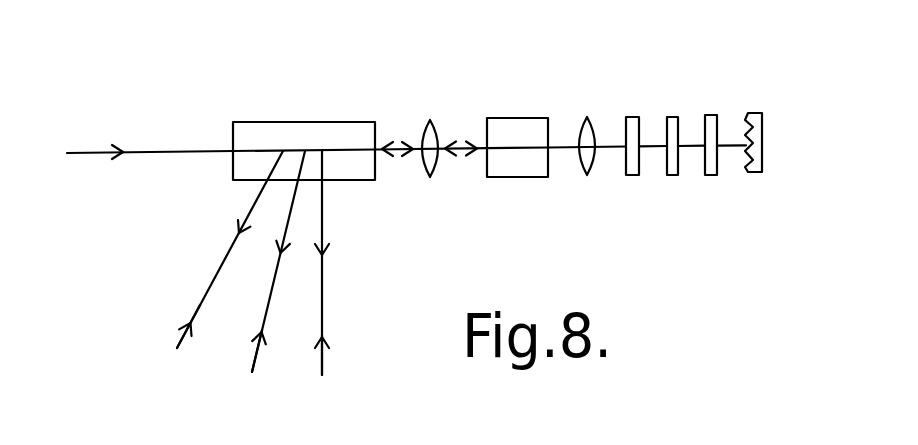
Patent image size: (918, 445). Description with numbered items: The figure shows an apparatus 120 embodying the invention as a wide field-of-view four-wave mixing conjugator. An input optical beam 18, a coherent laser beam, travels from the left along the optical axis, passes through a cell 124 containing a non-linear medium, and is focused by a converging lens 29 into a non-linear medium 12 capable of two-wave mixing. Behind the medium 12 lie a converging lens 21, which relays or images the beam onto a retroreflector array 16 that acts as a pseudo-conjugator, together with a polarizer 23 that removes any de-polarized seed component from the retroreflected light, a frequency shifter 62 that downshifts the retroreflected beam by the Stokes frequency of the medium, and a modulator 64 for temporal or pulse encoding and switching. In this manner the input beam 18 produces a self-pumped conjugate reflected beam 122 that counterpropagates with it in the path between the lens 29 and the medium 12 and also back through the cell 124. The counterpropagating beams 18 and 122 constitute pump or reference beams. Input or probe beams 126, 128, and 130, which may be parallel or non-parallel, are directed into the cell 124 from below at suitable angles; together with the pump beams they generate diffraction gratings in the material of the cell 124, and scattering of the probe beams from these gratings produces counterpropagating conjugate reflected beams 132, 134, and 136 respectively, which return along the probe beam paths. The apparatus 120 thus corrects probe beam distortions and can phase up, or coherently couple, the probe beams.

The non-linear medium 12 is at (508, 117).
The retroreflector array 16 is at (759, 113).
The input optical beam 18 is at (178, 150).
The converging lens 21 is at (587, 117).
The polarizer 23 is at (632, 177).
The converging lens 29 is at (432, 118).
The frequency shifter 62 is at (672, 117).
The modulator 64 is at (712, 177).
The apparatus 120 is at (360, 85).
The self-pumped conjugate reflected beam 122 is at (462, 150).
The cell 124 is at (285, 120).
The input or probe beam 126 is at (188, 328).
The input or probe beam 128 is at (256, 354).
The input or probe beam 130 is at (323, 362).
The counterpropagating conjugate reflected beam 132 is at (253, 199).
The counterpropagating conjugate reflected beam 134 is at (284, 246).
The counterpropagating conjugate reflected beam 136 is at (323, 222).